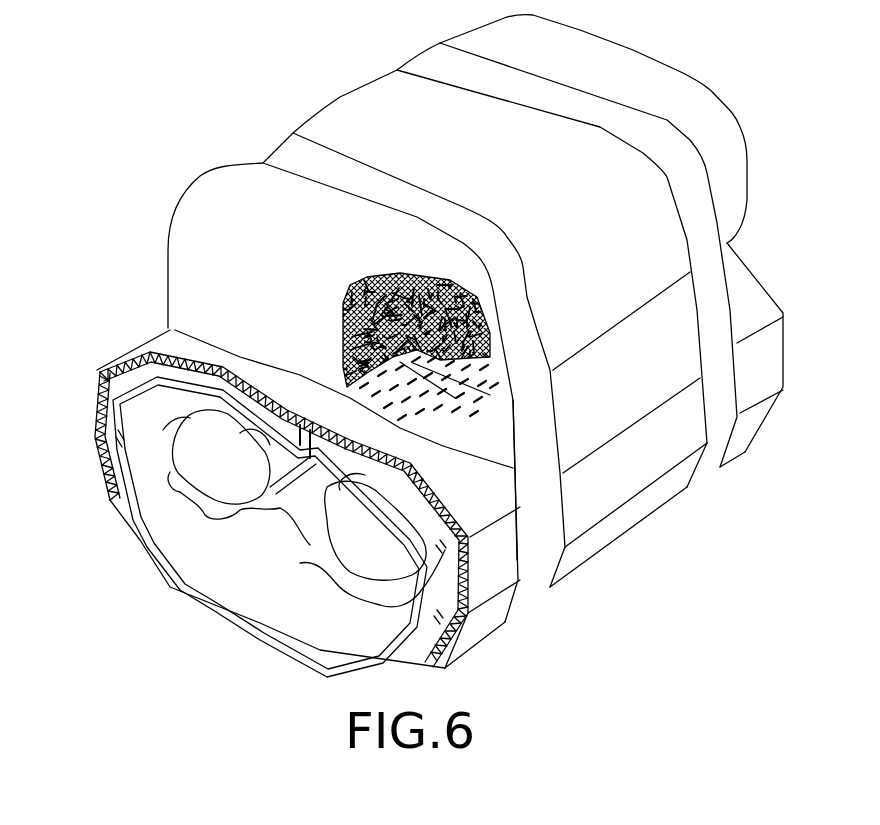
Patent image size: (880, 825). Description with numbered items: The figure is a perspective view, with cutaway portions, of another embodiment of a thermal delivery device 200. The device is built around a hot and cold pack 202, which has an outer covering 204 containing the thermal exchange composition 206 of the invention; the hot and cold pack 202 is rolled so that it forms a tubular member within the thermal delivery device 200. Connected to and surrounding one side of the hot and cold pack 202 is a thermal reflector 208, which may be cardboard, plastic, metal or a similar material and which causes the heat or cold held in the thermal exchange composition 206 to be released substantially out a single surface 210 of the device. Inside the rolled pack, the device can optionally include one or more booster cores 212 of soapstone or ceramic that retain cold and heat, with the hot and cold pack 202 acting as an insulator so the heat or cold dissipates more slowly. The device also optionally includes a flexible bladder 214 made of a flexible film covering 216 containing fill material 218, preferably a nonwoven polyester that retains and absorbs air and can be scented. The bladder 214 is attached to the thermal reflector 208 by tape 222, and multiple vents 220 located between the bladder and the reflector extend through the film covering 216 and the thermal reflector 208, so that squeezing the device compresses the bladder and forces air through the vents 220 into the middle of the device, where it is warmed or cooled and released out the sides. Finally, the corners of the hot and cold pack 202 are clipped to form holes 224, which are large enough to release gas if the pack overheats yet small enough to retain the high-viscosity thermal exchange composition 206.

The thermal delivery device 200 is at (127, 312).
The hot and cold pack 202 is at (173, 523).
The outer covering 204 is at (213, 577).
The thermal exchange composition 206 is at (313, 593).
The thermal reflector 208 is at (598, 543).
The single surface 210 is at (293, 639).
The booster core 212 is at (255, 474).
The flexible bladder 214 is at (565, 200).
The flexible film covering 216 is at (543, 370).
The fill material 218 is at (500, 297).
The vents 220 is at (387, 388).
The tape 222 is at (543, 453).
The holes 224 is at (317, 423).